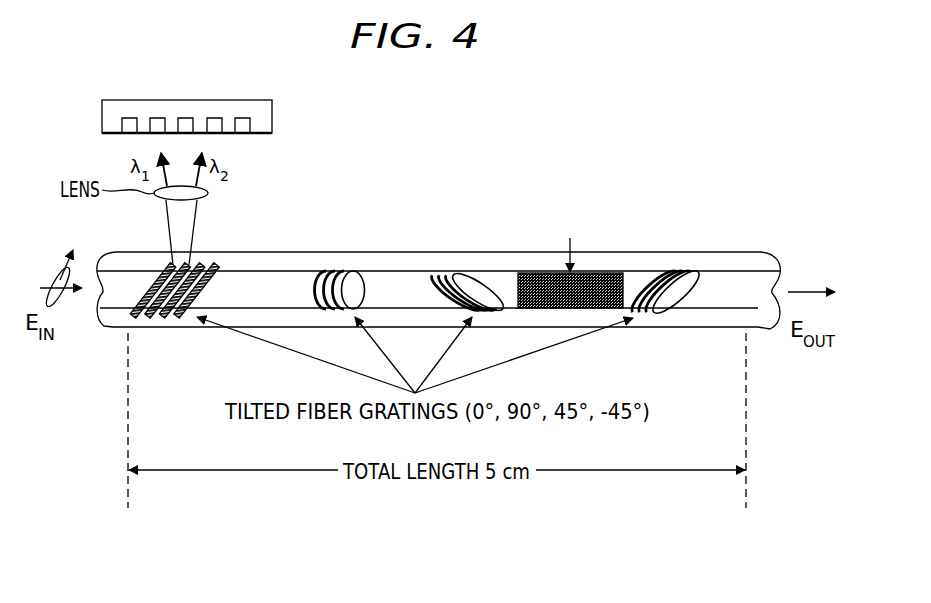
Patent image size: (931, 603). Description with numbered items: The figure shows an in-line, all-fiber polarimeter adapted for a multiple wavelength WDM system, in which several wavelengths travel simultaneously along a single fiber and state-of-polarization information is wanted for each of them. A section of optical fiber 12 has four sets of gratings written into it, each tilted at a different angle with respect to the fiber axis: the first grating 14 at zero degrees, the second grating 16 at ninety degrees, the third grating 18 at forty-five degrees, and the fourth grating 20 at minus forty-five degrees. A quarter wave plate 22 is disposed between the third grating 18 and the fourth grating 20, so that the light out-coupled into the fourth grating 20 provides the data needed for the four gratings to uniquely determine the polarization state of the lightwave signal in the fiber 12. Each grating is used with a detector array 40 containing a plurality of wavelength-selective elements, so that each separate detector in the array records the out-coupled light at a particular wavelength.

The optical fiber 12 is at (113, 327).
The first grating 14 is at (158, 273).
The second grating 16 is at (355, 272).
The third grating 18 is at (457, 273).
The fourth grating 20 is at (700, 270).
The quarter wave plate 22 is at (617, 273).
The detector array 40 is at (190, 99).